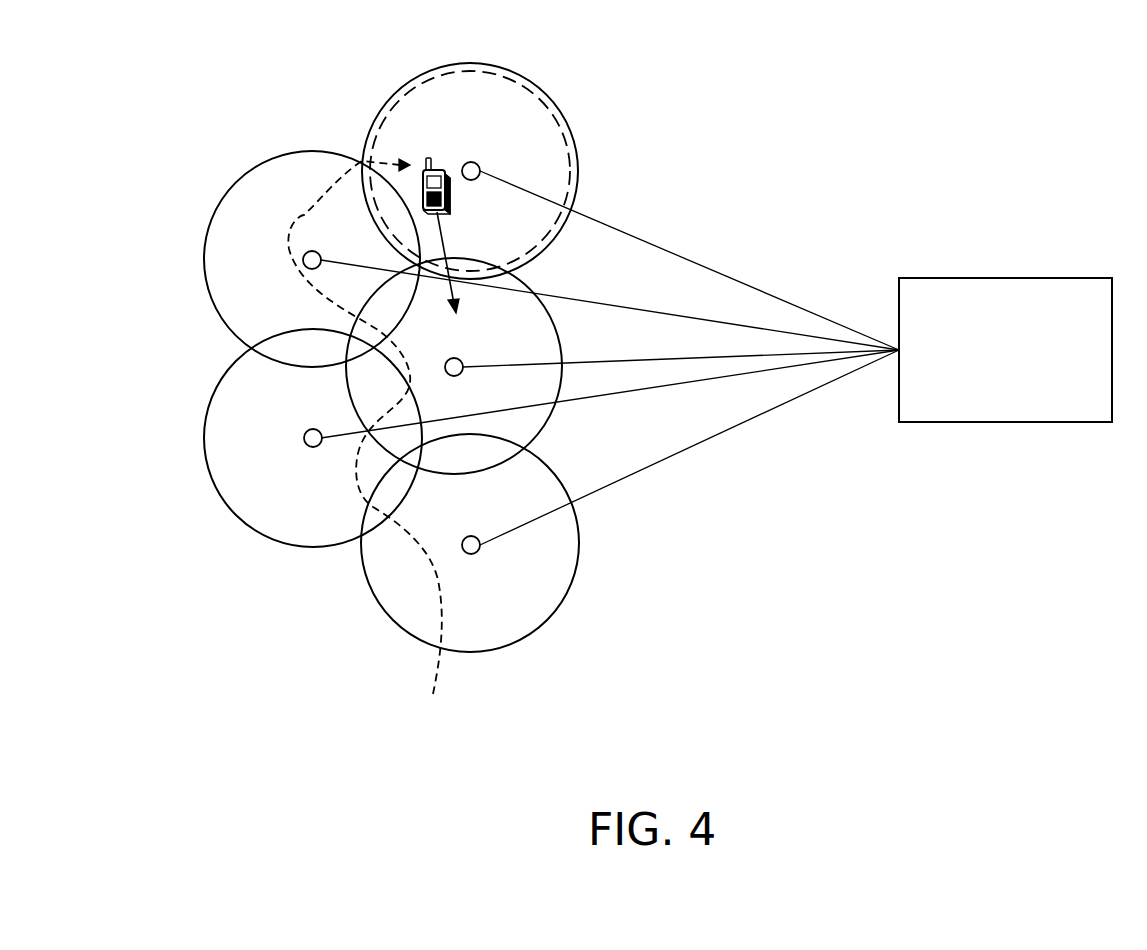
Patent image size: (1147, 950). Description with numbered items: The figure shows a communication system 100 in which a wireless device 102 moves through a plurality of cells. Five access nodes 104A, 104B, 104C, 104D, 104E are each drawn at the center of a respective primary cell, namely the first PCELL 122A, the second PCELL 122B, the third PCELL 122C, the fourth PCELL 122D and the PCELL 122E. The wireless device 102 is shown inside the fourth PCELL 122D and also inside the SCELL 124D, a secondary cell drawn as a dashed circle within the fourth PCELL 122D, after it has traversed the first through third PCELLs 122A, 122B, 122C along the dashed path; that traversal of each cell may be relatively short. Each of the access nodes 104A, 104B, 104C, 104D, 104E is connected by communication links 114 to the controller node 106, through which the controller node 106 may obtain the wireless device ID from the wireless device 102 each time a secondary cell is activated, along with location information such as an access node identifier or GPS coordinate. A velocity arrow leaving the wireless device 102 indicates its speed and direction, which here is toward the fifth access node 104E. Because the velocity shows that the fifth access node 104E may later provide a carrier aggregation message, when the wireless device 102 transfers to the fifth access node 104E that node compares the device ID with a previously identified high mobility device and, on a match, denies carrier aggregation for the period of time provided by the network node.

The communication system 100 is at (170, 604).
The wireless device 102 is at (428, 158).
The access node 104A is at (479, 553).
The access node 104B is at (313, 448).
The access node 104C is at (303, 260).
The access node 104D is at (480, 166).
The fifth access node 104E is at (455, 357).
The controller node 106 is at (1005, 350).
The communication links 114 is at (673, 226).
The first PCELL 122A is at (532, 633).
The second PCELL 122B is at (213, 399).
The third PCELL 122C is at (280, 156).
The fourth PCELL 122D is at (528, 82).
The PCELL 122E is at (553, 414).
The SCELL 124D is at (412, 84).